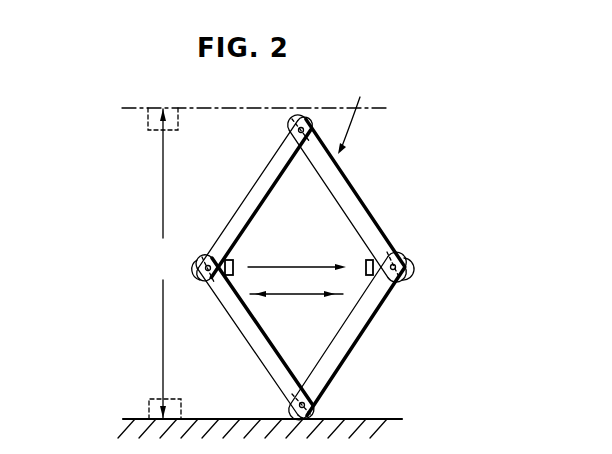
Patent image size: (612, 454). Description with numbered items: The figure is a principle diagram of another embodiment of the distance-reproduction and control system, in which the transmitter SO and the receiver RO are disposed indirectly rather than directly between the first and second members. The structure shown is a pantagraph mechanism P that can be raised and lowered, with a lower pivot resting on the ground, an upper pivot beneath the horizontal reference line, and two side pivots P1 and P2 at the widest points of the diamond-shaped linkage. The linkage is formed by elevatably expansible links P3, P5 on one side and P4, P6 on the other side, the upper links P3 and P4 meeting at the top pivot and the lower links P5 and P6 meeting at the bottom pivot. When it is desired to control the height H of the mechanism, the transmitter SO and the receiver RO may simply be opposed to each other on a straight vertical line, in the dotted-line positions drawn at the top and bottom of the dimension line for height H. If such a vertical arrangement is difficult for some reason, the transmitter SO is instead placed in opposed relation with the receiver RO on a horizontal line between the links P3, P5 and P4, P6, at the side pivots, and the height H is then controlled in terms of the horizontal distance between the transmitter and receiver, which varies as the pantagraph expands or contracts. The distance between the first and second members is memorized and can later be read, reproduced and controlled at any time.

The pantagraph mechanism P is at (355, 115).
The left pivot P1 is at (205, 284).
The right pivot P2 is at (399, 281).
The elevatably expansible link P3 is at (246, 193).
The elevatably expansible link P4 is at (342, 179).
The elevatably expansible link P5 is at (271, 349).
The elevatably expansible link P6 is at (350, 351).
The receiver RO is at (179, 121).
The transmitter SO is at (234, 260).
The height H is at (161, 263).